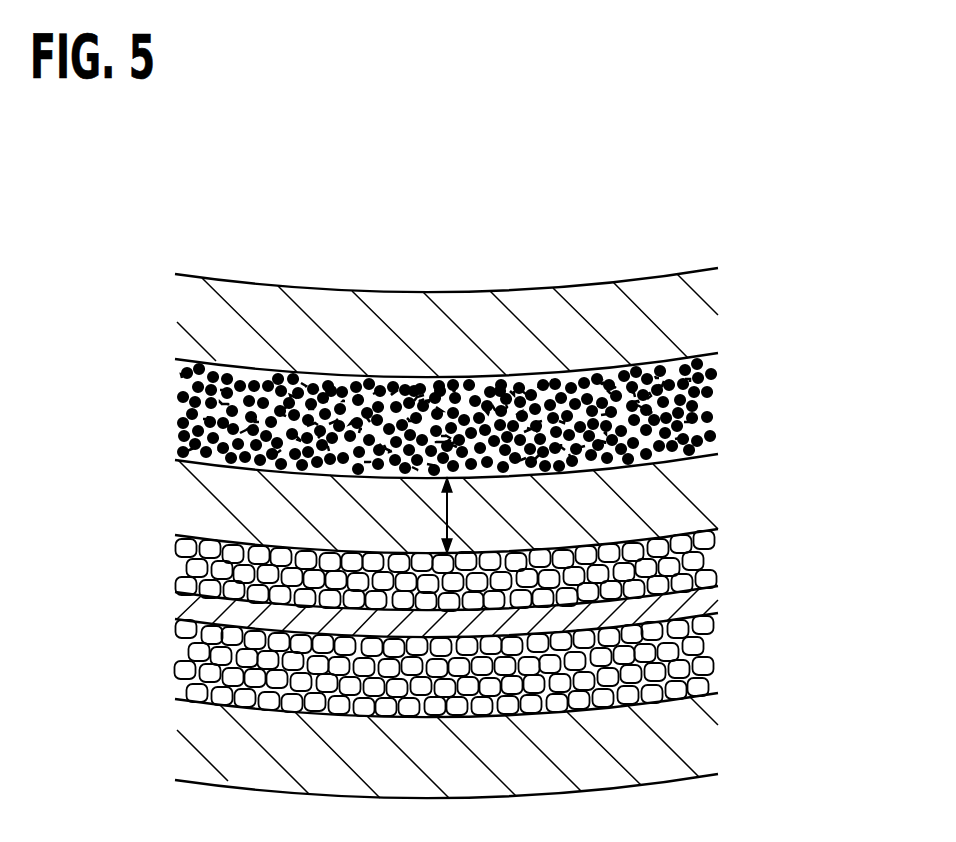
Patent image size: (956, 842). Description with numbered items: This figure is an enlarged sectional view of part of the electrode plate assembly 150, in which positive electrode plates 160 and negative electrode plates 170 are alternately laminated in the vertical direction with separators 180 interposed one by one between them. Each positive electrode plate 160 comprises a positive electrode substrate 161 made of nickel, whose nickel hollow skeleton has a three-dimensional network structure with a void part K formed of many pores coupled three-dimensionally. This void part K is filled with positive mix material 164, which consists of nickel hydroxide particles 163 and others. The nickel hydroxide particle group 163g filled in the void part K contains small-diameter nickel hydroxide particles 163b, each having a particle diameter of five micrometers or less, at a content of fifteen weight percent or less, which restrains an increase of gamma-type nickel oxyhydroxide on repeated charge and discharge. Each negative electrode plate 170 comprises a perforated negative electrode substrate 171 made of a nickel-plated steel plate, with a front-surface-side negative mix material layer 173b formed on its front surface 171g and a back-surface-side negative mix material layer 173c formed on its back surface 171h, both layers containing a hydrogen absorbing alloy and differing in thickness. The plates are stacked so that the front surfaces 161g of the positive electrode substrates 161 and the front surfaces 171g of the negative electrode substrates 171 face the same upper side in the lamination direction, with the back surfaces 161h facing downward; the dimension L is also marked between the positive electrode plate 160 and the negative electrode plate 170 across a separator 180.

The electrode plate assembly 150 is at (583, 186).
The separator 180 is at (207, 307).
The positive electrode plate 160 is at (168, 357).
The positive electrode substrate 161 is at (703, 397).
The front surface of positive electrode substrate 161g is at (593, 367).
The back surface of positive electrode substrate 161h is at (592, 463).
The positive mix material 164 is at (717, 418).
The nickel hydroxide particle group 163g is at (560, 205).
The nickel hydroxide particle 163 is at (415, 385).
The small-diameter nickel hydroxide particle 163b is at (500, 385).
The void part K is at (235, 468).
The distance L is at (447, 512).
The negative electrode plate 170 is at (170, 533).
The front-surface-side negative mix material layer 173b is at (695, 540).
The front surface of negative electrode substrate 171g is at (705, 566).
The negative electrode substrate 171 is at (677, 604).
The back surface of negative electrode substrate 171h is at (718, 638).
The back-surface-side negative mix material layer 173c is at (707, 665).